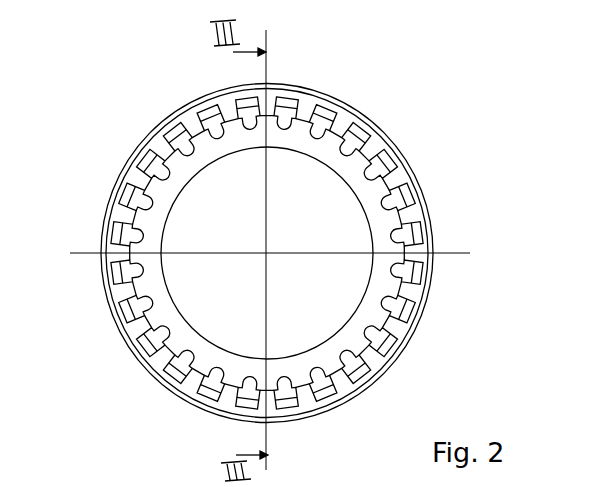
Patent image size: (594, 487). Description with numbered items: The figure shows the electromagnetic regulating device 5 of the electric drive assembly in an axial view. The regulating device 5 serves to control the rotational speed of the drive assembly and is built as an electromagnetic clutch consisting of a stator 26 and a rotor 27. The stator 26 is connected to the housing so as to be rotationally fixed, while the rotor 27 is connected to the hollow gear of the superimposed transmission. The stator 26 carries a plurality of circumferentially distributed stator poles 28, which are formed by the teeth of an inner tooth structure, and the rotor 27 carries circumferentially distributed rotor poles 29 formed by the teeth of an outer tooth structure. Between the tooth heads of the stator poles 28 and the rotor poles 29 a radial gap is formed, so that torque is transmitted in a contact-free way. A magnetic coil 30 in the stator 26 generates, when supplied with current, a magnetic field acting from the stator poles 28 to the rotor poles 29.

The electromagnetic regulating device 5 is at (117, 103).
The stator 26 is at (355, 110).
The rotor 27 is at (364, 178).
The stator poles 28 is at (393, 187).
The rotor poles 29 is at (397, 285).
The magnetic coil 30 is at (417, 231).